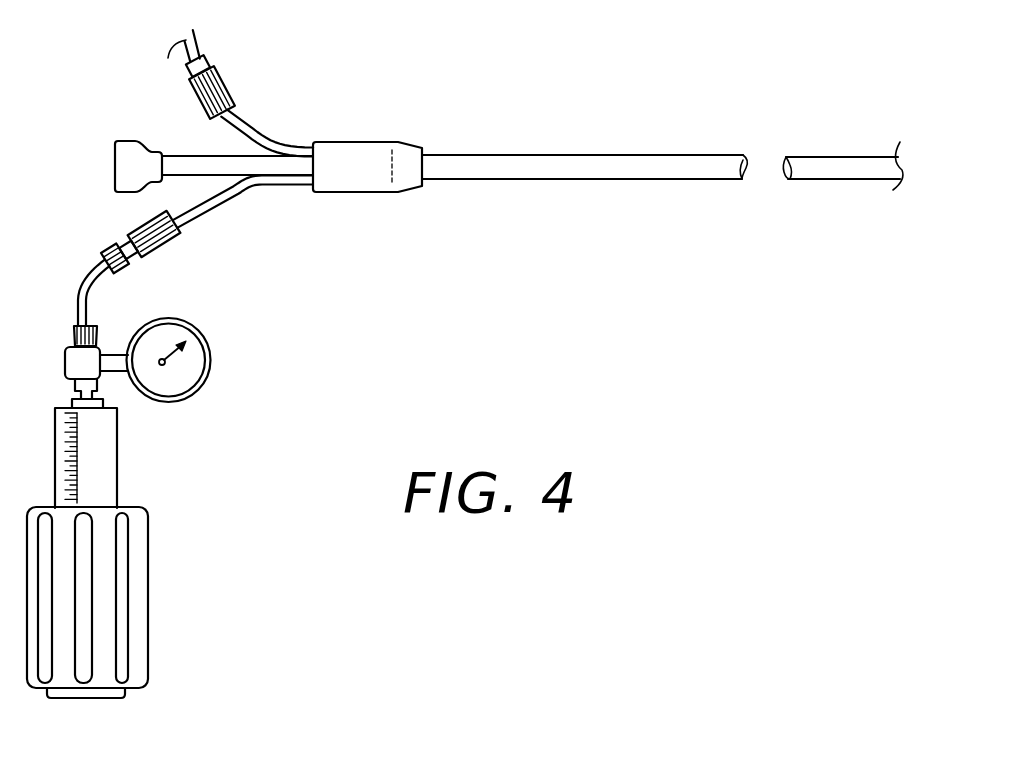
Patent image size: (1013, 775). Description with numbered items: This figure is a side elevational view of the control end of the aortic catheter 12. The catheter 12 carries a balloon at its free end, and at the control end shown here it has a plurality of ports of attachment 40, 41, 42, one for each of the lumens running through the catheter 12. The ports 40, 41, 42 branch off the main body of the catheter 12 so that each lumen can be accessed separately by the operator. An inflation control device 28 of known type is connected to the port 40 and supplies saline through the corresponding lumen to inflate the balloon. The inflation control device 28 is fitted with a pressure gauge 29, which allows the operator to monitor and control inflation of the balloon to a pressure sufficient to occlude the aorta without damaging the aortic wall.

The catheter 12 is at (557, 180).
The inflation control device 28 is at (134, 573).
The pressure gauge 29 is at (193, 368).
The port of attachment 40 is at (165, 237).
The port of attachment 41 is at (129, 158).
The port of attachment 42 is at (230, 88).